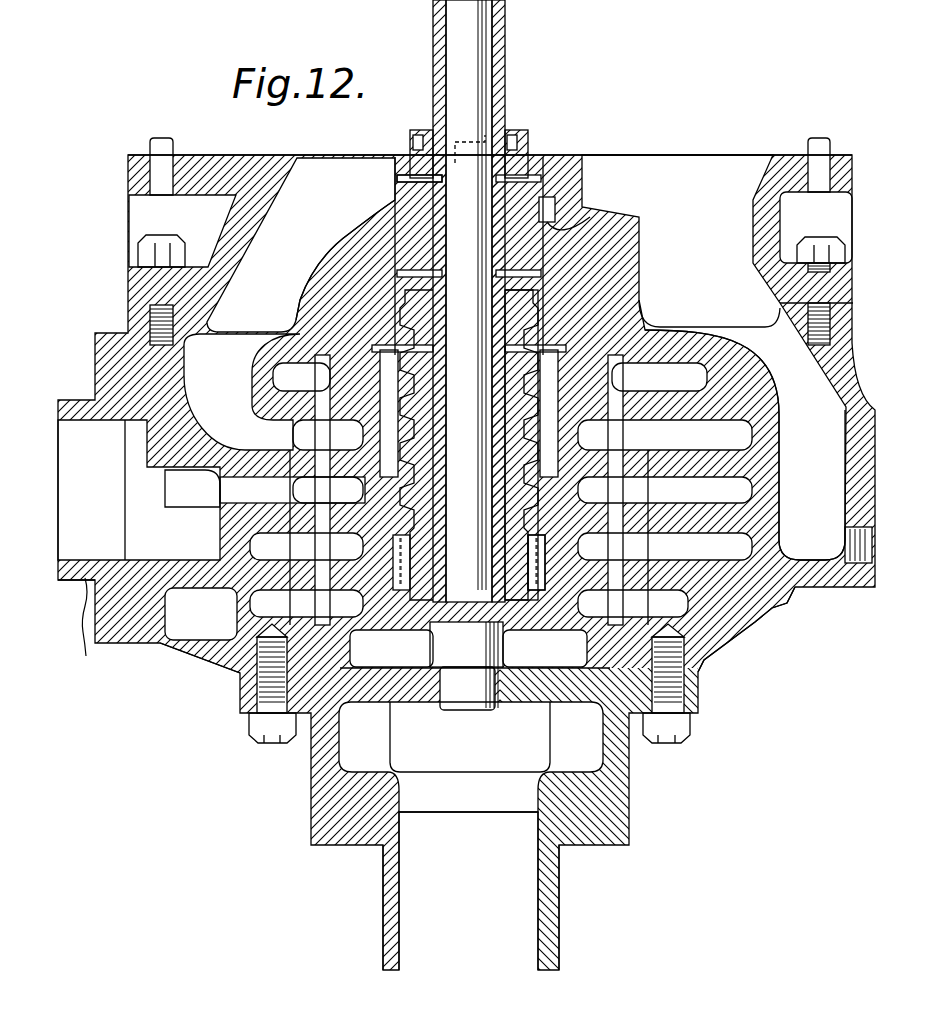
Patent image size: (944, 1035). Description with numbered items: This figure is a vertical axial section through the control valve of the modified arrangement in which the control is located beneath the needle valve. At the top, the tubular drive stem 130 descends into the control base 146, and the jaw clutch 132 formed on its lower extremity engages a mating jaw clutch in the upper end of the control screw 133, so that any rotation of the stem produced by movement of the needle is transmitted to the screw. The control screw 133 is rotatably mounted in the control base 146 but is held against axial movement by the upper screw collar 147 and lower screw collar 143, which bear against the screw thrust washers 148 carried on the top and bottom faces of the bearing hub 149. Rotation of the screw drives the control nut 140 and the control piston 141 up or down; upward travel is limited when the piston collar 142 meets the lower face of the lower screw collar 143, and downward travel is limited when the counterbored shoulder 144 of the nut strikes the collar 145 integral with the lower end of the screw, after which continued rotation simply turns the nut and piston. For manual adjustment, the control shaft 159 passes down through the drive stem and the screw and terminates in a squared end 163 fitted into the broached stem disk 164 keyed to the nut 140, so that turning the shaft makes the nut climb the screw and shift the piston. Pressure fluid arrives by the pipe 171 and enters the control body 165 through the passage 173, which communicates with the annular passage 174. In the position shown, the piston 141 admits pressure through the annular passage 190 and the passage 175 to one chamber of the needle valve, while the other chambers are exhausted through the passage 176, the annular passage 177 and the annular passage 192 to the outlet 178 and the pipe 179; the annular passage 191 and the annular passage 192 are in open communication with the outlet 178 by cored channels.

The tubular drive stem 130 is at (433, 34).
The control shaft 159 is at (478, 70).
The jaw clutch 132 is at (488, 136).
The control base 146 is at (247, 163).
The upper screw collar 147 is at (412, 147).
The bearing hub 149 is at (400, 196).
The lower screw collar 143 is at (400, 263).
The control screw 133 is at (433, 313).
The piston collar 142 is at (400, 338).
The screw thrust washers 148 is at (499, 257).
The passage 175 is at (301, 245).
The passage 176 is at (714, 357).
The annular passage 191 is at (283, 373).
The annular passage 190 is at (300, 423).
The control piston 141 is at (297, 434).
The control nut 140 is at (540, 436).
The counterbored shoulder 144 is at (559, 488).
The annular passage 174 is at (790, 488).
The passage 173 is at (139, 490).
The collar 145 is at (527, 541).
The annular passage 177 is at (222, 588).
The pipe 171 is at (91, 633).
The control body 165 is at (208, 593).
The annular passage 192 is at (268, 607).
The stem disk 164 is at (423, 597).
The squared end 163 is at (457, 583).
The outlet 178 is at (471, 757).
The pipe 179 is at (530, 912).